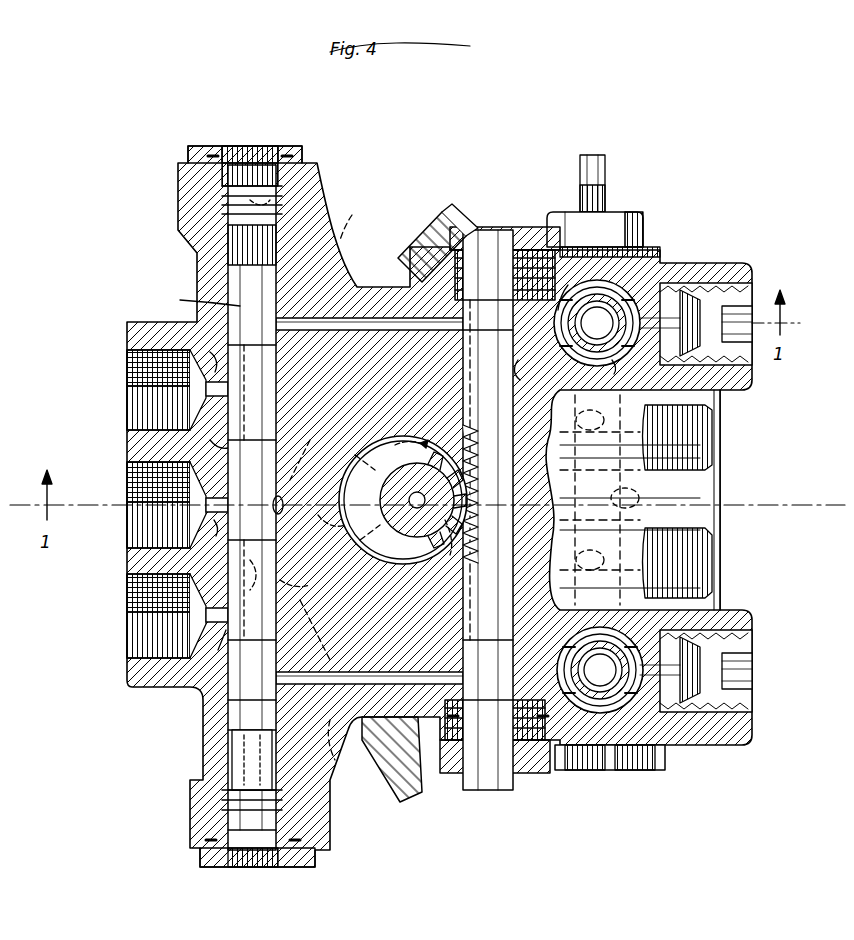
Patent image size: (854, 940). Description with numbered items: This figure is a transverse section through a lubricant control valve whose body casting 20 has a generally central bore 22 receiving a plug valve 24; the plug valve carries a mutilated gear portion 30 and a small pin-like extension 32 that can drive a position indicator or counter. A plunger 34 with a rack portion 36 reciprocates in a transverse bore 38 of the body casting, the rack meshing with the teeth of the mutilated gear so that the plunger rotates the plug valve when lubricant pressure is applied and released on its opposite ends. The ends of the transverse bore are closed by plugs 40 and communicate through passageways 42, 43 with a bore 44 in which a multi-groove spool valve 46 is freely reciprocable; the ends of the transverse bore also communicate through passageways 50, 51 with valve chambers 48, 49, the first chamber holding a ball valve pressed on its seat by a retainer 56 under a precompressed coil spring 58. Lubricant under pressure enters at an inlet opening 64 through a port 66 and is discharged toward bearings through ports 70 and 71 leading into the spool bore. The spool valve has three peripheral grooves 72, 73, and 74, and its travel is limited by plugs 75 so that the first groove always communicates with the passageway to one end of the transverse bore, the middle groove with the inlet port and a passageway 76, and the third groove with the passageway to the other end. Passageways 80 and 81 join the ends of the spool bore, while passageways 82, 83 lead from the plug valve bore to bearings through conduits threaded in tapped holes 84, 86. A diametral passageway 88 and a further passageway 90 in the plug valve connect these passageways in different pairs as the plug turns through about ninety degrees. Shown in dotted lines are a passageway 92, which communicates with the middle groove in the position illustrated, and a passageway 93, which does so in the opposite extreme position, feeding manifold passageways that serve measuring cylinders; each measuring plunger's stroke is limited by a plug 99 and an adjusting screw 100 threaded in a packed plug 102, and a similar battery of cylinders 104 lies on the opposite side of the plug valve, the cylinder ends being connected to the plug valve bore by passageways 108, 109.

The body casting 20 is at (180, 690).
The central bore 22 is at (415, 590).
The plug valve 24 is at (420, 566).
The mutilated gear portion 30 is at (350, 478).
The pin-like extension 32 is at (424, 441).
The plunger 34 is at (470, 356).
The rack portion 36 is at (633, 500).
The transverse bore 38 is at (531, 369).
The plugs 40 is at (512, 240).
The passageway 42 is at (380, 285).
The passageway 43 is at (396, 760).
The bore 44 is at (240, 762).
The spool valve 46 is at (238, 248).
The valve chamber 48 is at (695, 285).
The valve chamber 49 is at (630, 770).
The passageway 50 is at (554, 284).
The passageway 51 is at (552, 680).
The retainer 56 is at (615, 375).
The coil spring 58 is at (604, 290).
The inlet opening 64 is at (127, 476).
The port 66 is at (209, 538).
The port 70 is at (206, 353).
The port 71 is at (213, 653).
The peripheral groove 72 is at (202, 299).
The peripheral groove 73 is at (301, 452).
The peripheral groove 74 is at (369, 641).
The plugs 75 is at (282, 150).
The passageway 76 is at (282, 495).
The passageway 80 is at (340, 219).
The passageway 81 is at (345, 750).
The passageway 82 is at (595, 415).
The passageway 83 is at (587, 548).
The tapped hole 84 is at (700, 455).
The tapped hole 86 is at (712, 585).
The diametral passageway 88 is at (443, 549).
The passageway 90 is at (331, 533).
The passageway 92 is at (211, 441).
The passageway 93 is at (299, 573).
The plug 99 is at (240, 290).
The adjusting screw 100 is at (600, 195).
The plug 102 is at (640, 225).
The cylinders 104 is at (656, 494).
The passageway 108 is at (369, 340).
The passageway 109 is at (282, 564).